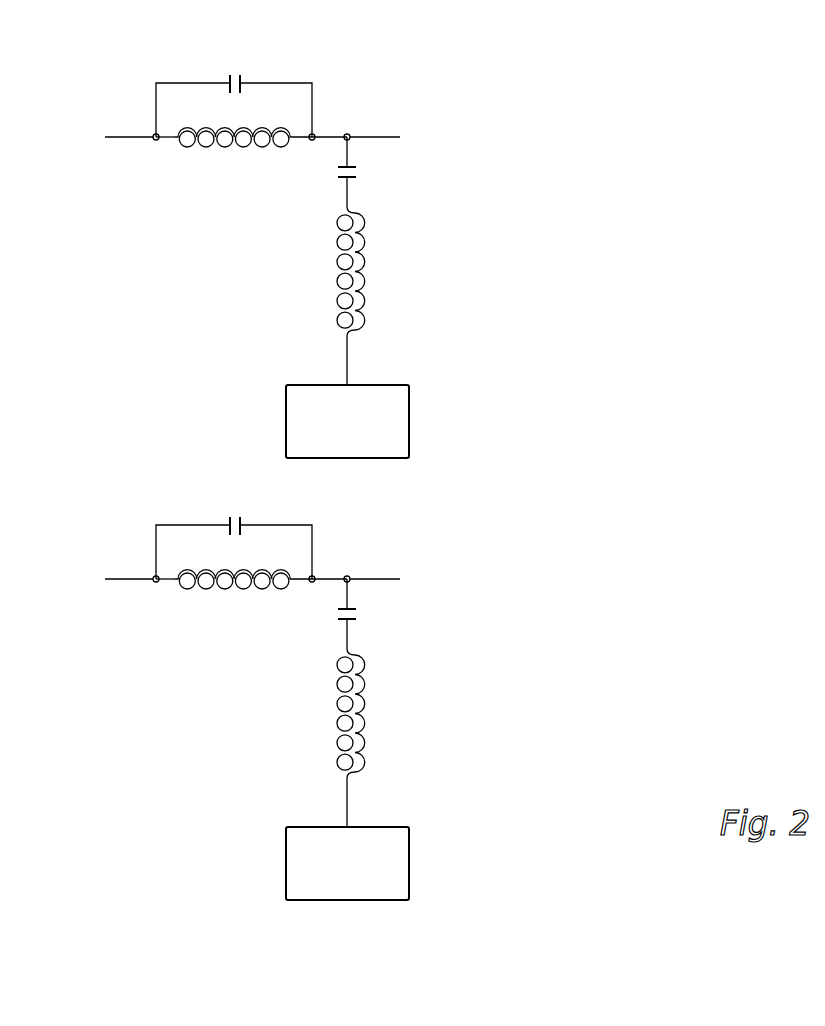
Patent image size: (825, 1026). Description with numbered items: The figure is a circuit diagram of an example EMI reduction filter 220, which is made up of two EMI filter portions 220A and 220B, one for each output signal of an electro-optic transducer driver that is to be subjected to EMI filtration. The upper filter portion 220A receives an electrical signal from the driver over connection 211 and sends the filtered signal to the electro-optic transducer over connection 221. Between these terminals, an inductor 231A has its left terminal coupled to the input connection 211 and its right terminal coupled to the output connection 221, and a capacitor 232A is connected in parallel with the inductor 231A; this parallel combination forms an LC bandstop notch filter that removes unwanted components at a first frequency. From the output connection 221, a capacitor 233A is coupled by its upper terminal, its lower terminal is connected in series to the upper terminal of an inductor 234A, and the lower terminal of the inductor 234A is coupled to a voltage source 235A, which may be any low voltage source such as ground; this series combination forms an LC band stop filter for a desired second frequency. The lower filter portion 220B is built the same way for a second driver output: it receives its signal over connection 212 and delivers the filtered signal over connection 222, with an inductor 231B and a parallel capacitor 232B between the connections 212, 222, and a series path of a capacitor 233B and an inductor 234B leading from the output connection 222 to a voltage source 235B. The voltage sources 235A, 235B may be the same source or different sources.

The connection 211 is at (122, 137).
The connection 212 is at (122, 579).
The connection 221 is at (382, 137).
The connection 222 is at (382, 579).
The EMI reduction filter 220 is at (419, 469).
The EMI filter portion 220A is at (282, 213).
The EMI filter portion 220B is at (282, 653).
The inductor 231A is at (242, 147).
The inductor 231B is at (242, 589).
The capacitor 232A is at (233, 73).
The capacitor 232B is at (233, 515).
The capacitor 233A is at (357, 174).
The capacitor 233B is at (357, 616).
The inductor 234A is at (357, 268).
The inductor 234B is at (357, 710).
The voltage source 235A is at (410, 421).
The voltage source 235B is at (410, 863).